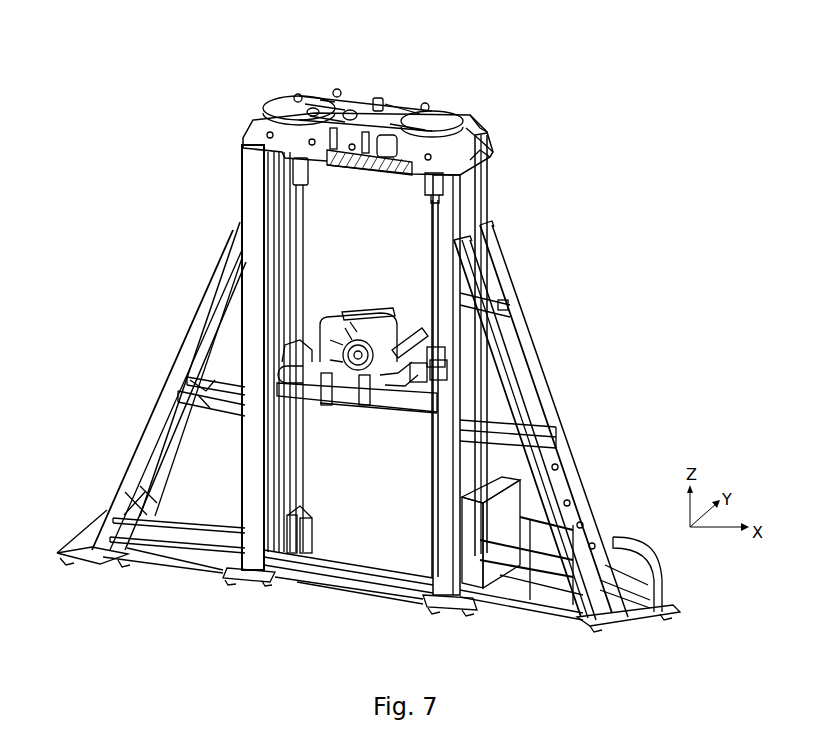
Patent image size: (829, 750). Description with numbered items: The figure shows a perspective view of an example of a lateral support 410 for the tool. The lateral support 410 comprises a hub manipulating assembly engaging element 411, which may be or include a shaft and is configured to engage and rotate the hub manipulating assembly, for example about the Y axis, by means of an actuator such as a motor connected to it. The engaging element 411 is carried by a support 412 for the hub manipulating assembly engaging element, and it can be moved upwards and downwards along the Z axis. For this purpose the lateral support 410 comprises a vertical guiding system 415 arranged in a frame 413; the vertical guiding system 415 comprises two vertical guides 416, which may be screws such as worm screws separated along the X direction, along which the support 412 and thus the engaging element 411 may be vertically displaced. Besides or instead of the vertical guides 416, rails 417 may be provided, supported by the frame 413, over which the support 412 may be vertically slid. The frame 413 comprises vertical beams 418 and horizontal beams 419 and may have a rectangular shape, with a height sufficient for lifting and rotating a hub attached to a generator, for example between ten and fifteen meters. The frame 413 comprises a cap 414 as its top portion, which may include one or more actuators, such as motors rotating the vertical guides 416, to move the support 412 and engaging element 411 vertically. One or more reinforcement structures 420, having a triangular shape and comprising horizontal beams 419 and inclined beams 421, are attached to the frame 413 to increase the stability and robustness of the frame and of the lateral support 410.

The lateral support 410 is at (532, 78).
The hub manipulating assembly engaging element 411 is at (337, 394).
The support for the hub manipulating assembly engaging element 412 is at (378, 396).
The frame 413 is at (361, 86).
The cap 414 is at (248, 122).
The vertical guiding system 415 is at (287, 570).
The vertical guides 416 is at (307, 246).
The rails 417 is at (264, 233).
The vertical beams 418 is at (257, 482).
The horizontal beams 419 is at (160, 552).
The reinforcement structure 420 is at (597, 397).
The inclined beams 421 is at (154, 424).